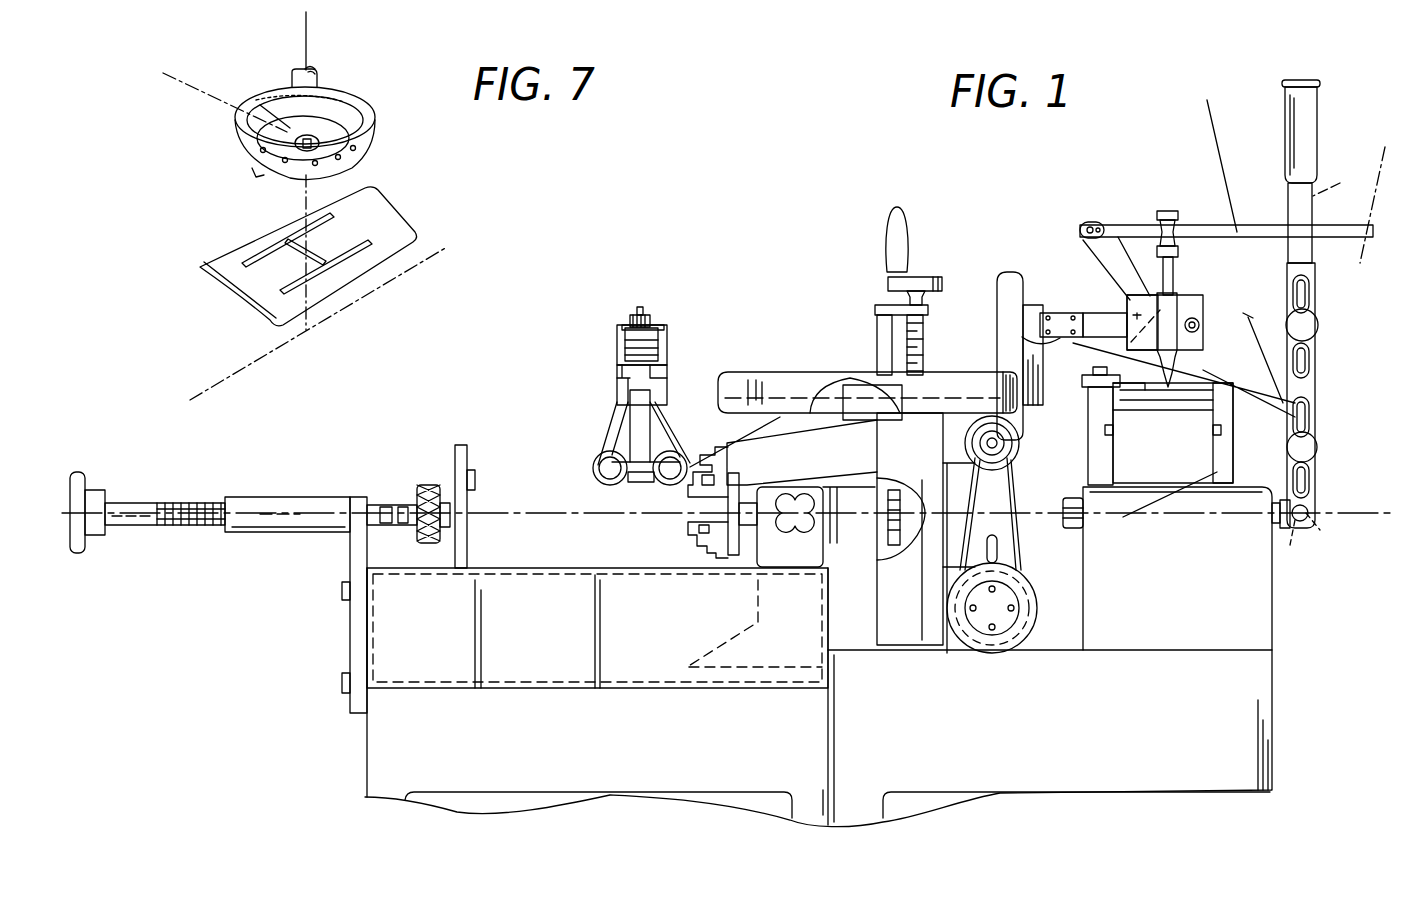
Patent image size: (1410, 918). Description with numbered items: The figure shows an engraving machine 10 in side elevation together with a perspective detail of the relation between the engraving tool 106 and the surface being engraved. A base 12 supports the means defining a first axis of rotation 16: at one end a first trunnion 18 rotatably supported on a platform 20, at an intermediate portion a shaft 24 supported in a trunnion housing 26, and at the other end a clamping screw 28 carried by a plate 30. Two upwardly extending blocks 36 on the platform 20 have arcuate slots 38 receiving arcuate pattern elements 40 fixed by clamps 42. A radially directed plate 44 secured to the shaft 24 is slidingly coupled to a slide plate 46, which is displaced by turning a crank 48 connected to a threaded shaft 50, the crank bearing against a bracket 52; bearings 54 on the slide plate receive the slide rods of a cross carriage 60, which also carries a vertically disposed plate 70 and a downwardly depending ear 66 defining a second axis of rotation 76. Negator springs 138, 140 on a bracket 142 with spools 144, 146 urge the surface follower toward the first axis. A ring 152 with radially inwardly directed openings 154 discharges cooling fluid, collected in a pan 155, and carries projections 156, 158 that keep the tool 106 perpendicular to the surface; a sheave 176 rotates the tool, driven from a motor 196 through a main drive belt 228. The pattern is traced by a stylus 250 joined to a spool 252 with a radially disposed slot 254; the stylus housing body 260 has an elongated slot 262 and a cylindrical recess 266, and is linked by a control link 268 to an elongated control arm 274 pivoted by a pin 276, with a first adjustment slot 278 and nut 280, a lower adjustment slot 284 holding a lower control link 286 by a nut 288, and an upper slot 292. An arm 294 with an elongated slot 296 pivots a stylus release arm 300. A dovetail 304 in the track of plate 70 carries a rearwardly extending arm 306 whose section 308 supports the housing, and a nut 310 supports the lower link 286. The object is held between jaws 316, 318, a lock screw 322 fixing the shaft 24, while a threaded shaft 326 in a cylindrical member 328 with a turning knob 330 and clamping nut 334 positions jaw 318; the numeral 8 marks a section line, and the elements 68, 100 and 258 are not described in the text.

In FIG. 1, the engraving machine 10 is at (770, 185).
In FIG. 1, the base 12 is at (375, 773).
In FIG. 7, the first axis of rotation 16 is at (205, 385).
In FIG. 1, the first axis of rotation 16 is at (115, 520).
In FIG. 1, the first trunnion 18 is at (1275, 527).
In FIG. 1, the platform 20 is at (1262, 580).
In FIG. 1, the shaft 24 is at (747, 565).
In FIG. 1, the trunnion housing 26 is at (772, 565).
In FIG. 1, the clamping screw 28 is at (150, 500).
In FIG. 1, the plate 30 is at (345, 562).
In FIG. 1, the upwardly extending blocks 36 is at (1102, 477).
In FIG. 1, the arcuate slot 38 is at (1215, 440).
In FIG. 1, the arcuate pattern elements 40 is at (1228, 418).
In FIG. 1, the clamps 42 is at (1085, 378).
In FIG. 1, the radially directed plate 44 is at (878, 552).
In FIG. 1, the slide plate 46 is at (903, 630).
In FIG. 1, the crank 48 is at (918, 276).
In FIG. 1, the threaded shaft 50 is at (922, 335).
In FIG. 1, the bracket 52 is at (873, 312).
In FIG. 1, the elongated cylindrical bearings 54 is at (858, 385).
In FIG. 1, the cross carriage 60 is at (788, 372).
In FIG. 1, the ear 66 is at (700, 418).
In FIG. 1, the clamp saddle 68 is at (826, 385).
In FIG. 1, the slide rods / vertically disposed plate 70 is at (998, 300).
In FIG. 7, the second axis of rotation 76 is at (178, 95).
In FIG. 1, the tool post pillar 100 is at (636, 420).
In FIG. 7, the engraving tool 106 is at (302, 158).
In FIG. 1, the engraving tool 106 is at (645, 310).
In FIG. 1, the negator spring 138 is at (678, 390).
In FIG. 1, the negator spring 140 is at (620, 428).
In FIG. 1, the bracket 142 is at (630, 477).
In FIG. 1, the spool 144 is at (600, 462).
In FIG. 1, the spool 146 is at (690, 485).
In FIG. 7, the ring 152 is at (240, 138).
In FIG. 7, the radially inwardly directed openings 154 is at (240, 160).
In FIG. 1, the pan 155 is at (585, 575).
In FIG. 7, the projection 156 is at (348, 128).
In FIG. 7, the projection 158 is at (250, 172).
In FIG. 1, the sheave 176 is at (660, 333).
In FIG. 1, the motor 196 is at (1005, 645).
In FIG. 1, the main drive belt 228 is at (1020, 528).
In FIG. 1, the stylus 250 is at (1173, 270).
In FIG. 1, the elongated cylindrical spool 252 is at (1167, 210).
In FIG. 1, the radially disposed slot 254 is at (1175, 222).
In FIG. 1, the center point 258 is at (1180, 296).
In FIG. 1, the body 260 is at (1200, 305).
In FIG. 1, the elongated slot 262 is at (1122, 312).
In FIG. 1, the cylindrical recess 266 is at (1086, 240).
In FIG. 1, the control link 268 is at (1312, 283).
In FIG. 1, the elongated control arm 274 is at (1308, 130).
In FIG. 1, the pin 276 is at (1296, 528).
In FIG. 1, the first adjustment slot 278 is at (1309, 300).
In FIG. 1, the nut 280 is at (1312, 348).
In FIG. 1, the lower adjustment slot 284 is at (1309, 440).
In FIG. 1, the lower control link 286 is at (1300, 460).
In FIG. 1, the nut 288 is at (1310, 470).
In FIG. 1, the slot 292 is at (1300, 190).
In FIG. 1, the arm 294 is at (1110, 278).
In FIG. 1, the elongated slot 296 is at (1080, 225).
In FIG. 1, the stylus release arm 300 is at (1138, 198).
In FIG. 1, the vertically extending dovetail 304 is at (1032, 415).
In FIG. 1, the rearwardly extending arm 306 is at (1040, 305).
In FIG. 1, the rearwardly extending section 308 is at (1043, 352).
In FIG. 1, the nut 310 is at (1040, 287).
In FIG. 1, the jaw 316 is at (700, 538).
In FIG. 1, the jaw 318 is at (465, 460).
In FIG. 1, the lock screw 322 is at (392, 503).
In FIG. 1, the threaded shaft 326 is at (210, 500).
In FIG. 1, the cylindrical member 328 is at (290, 497).
In FIG. 1, the turning knob 330 is at (80, 486).
In FIG. 1, the clamping nut 334 is at (425, 484).
In FIG. 1, the section line 8- 8 is at (1160, 440).